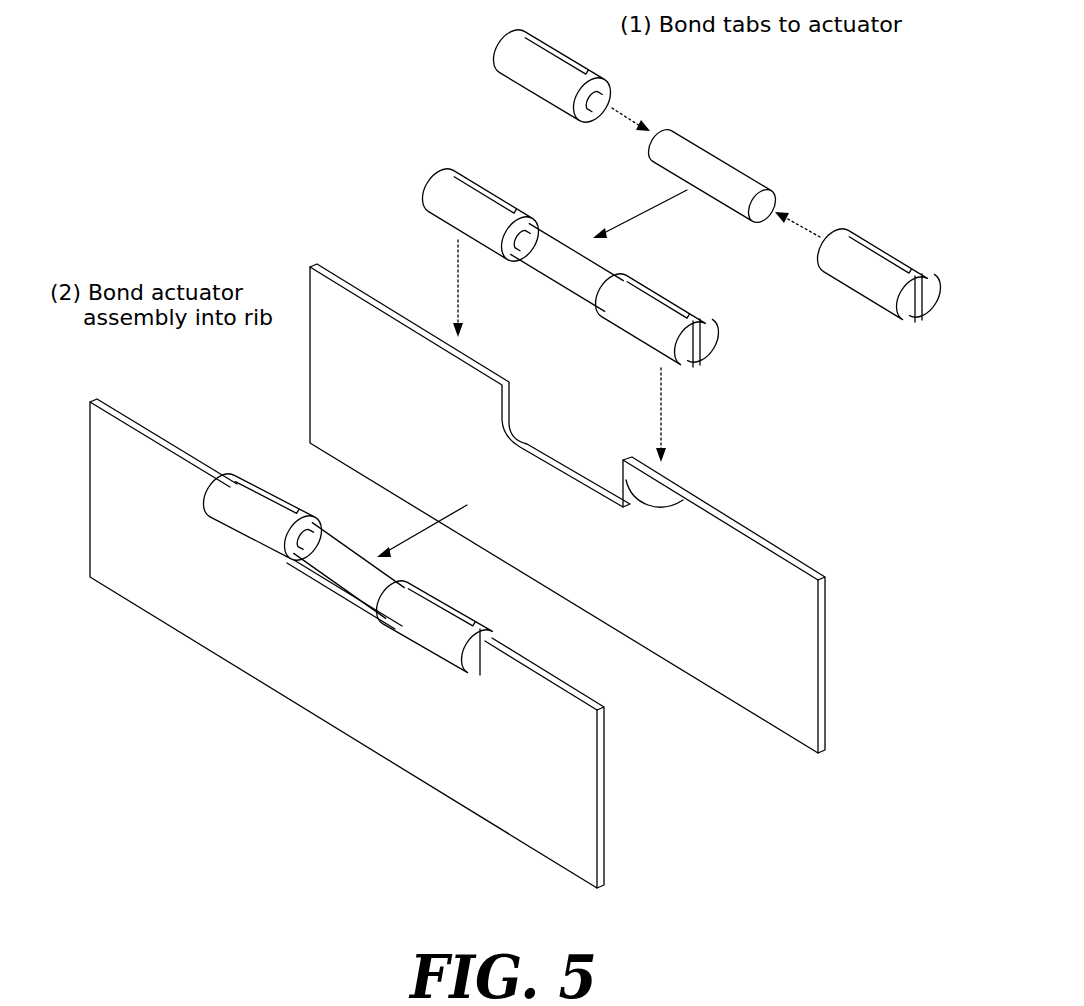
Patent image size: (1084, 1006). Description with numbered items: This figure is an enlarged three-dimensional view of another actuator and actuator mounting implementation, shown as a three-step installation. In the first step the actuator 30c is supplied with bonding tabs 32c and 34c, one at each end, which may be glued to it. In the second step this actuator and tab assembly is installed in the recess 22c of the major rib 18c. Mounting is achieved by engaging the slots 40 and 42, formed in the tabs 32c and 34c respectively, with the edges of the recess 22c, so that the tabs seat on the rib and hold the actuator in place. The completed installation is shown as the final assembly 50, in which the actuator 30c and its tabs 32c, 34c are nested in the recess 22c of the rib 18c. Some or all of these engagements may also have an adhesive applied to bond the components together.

The major rib 18c is at (792, 738).
The recess 22c is at (663, 507).
The actuator 30c is at (713, 157).
The bonding tab 32c is at (510, 52).
The bonding tab 34c is at (867, 235).
The slot 40 is at (478, 184).
The slot 42 is at (706, 354).
The final assembly 50 is at (288, 762).